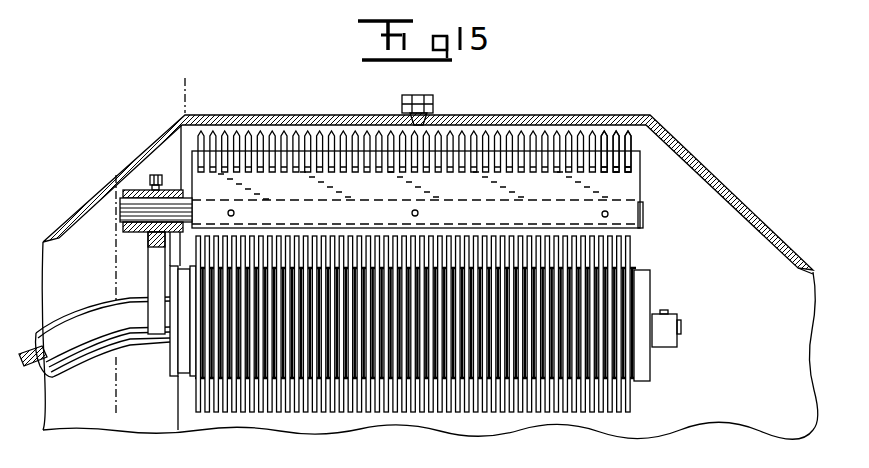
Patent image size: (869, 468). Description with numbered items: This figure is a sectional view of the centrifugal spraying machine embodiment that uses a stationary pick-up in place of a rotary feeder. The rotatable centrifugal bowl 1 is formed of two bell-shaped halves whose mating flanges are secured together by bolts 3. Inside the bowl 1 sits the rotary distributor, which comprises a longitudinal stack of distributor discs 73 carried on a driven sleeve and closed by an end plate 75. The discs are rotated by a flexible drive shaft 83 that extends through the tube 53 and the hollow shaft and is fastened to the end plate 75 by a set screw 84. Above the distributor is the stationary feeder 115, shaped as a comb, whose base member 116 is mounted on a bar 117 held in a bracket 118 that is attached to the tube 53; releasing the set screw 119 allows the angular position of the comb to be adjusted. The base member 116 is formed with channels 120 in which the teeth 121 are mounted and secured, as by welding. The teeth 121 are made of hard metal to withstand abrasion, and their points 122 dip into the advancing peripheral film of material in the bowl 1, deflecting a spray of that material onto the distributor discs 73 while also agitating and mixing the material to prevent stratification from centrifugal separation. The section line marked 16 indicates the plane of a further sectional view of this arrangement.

The centrifugal bowl 1 is at (735, 191).
The bolts 3 is at (434, 100).
The section line 16- 16 is at (183, 66).
The tube 53 is at (56, 322).
The distributor discs 73 is at (630, 416).
The end plate 75 is at (652, 364).
The flexible drive shaft 83 is at (26, 368).
The set screw 84 is at (667, 311).
The stationary feeder 115 is at (649, 195).
The base member 116 is at (631, 215).
The bar 117 is at (150, 224).
The bracket 118 is at (152, 274).
The set screw 119 is at (157, 175).
The channels 120 is at (636, 172).
The teeth 121 is at (282, 131).
The points 122 is at (635, 100).